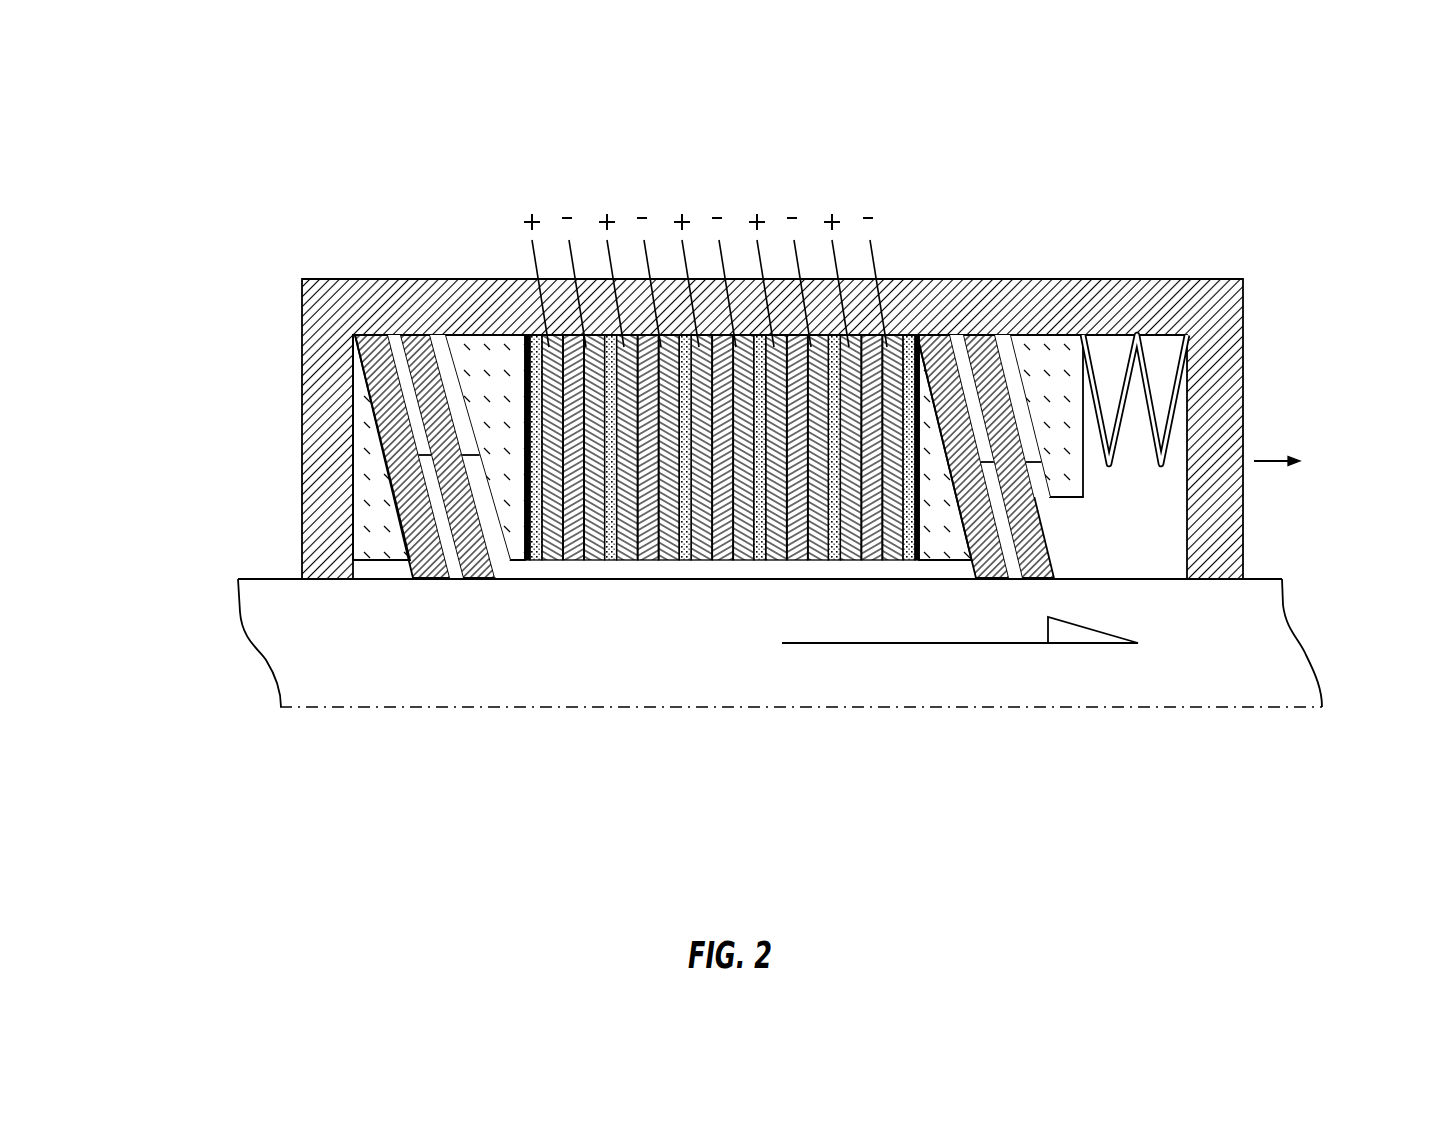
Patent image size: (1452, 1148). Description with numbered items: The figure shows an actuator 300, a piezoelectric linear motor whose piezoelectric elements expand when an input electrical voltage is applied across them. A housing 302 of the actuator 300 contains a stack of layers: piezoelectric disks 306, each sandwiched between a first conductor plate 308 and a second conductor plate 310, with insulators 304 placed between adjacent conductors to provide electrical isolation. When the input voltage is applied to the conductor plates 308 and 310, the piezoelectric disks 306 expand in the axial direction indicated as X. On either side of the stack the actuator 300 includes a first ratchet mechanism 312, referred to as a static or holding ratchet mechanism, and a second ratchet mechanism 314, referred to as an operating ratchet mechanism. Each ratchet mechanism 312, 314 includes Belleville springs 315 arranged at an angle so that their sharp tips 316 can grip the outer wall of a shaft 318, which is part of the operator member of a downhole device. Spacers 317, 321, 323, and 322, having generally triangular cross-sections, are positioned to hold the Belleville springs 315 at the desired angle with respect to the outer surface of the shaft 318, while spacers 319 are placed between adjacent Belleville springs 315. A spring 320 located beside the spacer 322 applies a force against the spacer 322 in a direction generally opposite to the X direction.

The actuator 300 is at (1327, 210).
The housing 302 is at (1205, 323).
The insulator 304 is at (657, 548).
The piezoelectric disk 306 is at (863, 563).
The first conductor plate 308 is at (680, 567).
The second conductor plate 310 is at (591, 562).
The first ratchet mechanism 312 is at (422, 271).
The second ratchet mechanism 314 is at (970, 272).
The Belleville spring 315 is at (316, 456).
The sharp tip 316 is at (483, 568).
The spacer 317 is at (309, 447).
The shaft 318 is at (780, 688).
The spacer 319 is at (437, 342).
The spring 320 is at (1216, 379).
The spacer 321 is at (465, 377).
The spacer 322 is at (1125, 345).
The spacer 323 is at (903, 515).